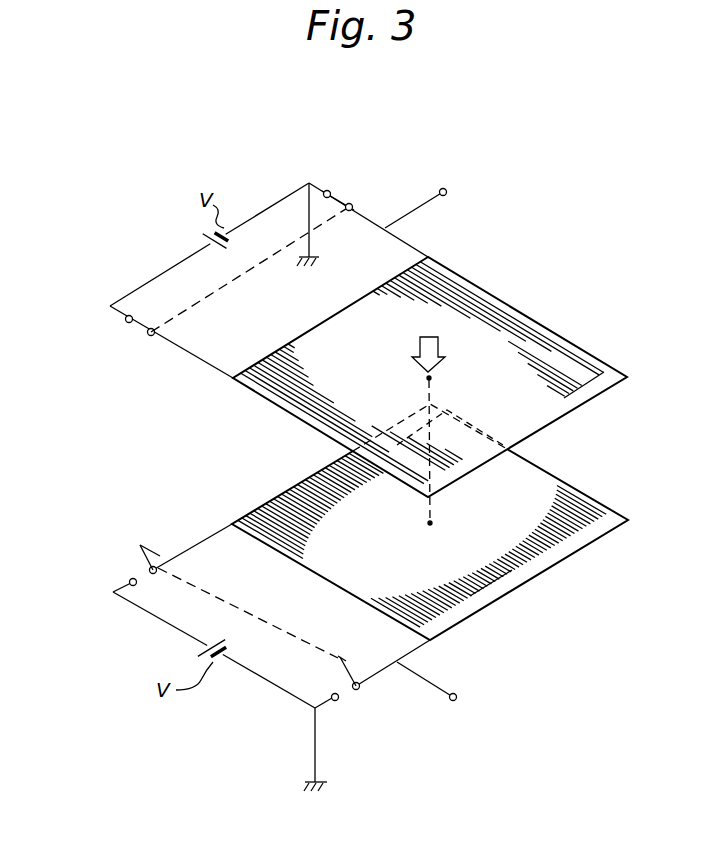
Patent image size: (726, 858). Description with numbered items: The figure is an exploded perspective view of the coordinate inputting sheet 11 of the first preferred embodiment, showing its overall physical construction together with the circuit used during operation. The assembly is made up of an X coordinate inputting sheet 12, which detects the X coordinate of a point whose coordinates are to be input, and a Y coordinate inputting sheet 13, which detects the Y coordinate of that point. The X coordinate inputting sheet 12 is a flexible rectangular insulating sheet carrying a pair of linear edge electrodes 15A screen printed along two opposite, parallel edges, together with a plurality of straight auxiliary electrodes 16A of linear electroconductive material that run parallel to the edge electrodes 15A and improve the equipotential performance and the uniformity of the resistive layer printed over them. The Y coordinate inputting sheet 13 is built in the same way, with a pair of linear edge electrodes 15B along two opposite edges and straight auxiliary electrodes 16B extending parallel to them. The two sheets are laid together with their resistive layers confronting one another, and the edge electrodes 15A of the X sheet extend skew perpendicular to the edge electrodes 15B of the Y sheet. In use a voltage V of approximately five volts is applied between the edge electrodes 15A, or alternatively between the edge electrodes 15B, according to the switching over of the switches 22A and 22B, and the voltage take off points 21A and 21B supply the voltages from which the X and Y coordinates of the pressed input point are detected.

The light shutter device 11 is at (595, 220).
The X coordinate inputting sheet 12 is at (463, 272).
The Y coordinate inputting sheet 13 is at (613, 505).
The linear edge electrodes 15A is at (530, 323).
The linear edge electrodes 15B is at (580, 546).
The auxiliary electrodes 16A is at (602, 361).
The auxiliary electrodes 16B is at (493, 578).
The voltage take off point 21A is at (444, 189).
The voltage take off point 21B is at (458, 693).
The switch 22A is at (344, 201).
The switch 22B is at (135, 565).